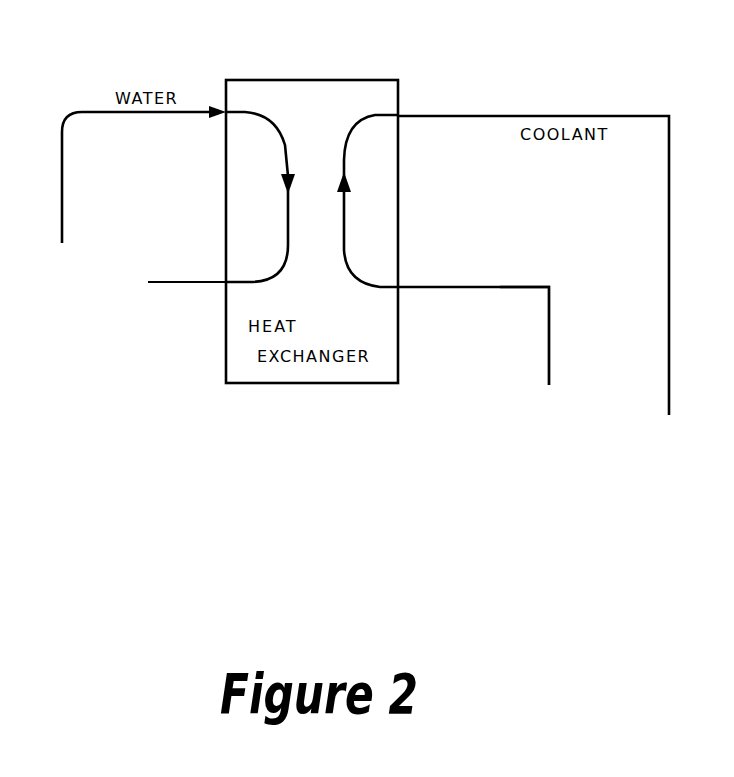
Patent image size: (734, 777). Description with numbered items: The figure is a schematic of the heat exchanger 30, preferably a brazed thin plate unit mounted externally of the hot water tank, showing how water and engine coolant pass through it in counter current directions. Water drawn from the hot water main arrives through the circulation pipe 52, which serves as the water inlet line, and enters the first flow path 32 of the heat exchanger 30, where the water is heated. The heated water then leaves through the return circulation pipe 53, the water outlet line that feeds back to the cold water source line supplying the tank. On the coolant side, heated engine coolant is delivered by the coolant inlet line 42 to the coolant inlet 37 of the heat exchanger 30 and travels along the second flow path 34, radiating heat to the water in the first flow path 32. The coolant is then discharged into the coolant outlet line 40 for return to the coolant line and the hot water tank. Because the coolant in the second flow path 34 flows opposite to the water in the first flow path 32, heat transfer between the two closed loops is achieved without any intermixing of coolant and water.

The heat exchanger 30 is at (323, 80).
The first flow path 32 is at (280, 135).
The second flow path 34 is at (370, 115).
The coolant inlet 37 is at (397, 288).
The coolant outlet line 40 is at (628, 114).
The coolant inlet line 42 is at (518, 288).
The circulation pipe 52 is at (72, 118).
The return circulation pipe 53 is at (183, 282).